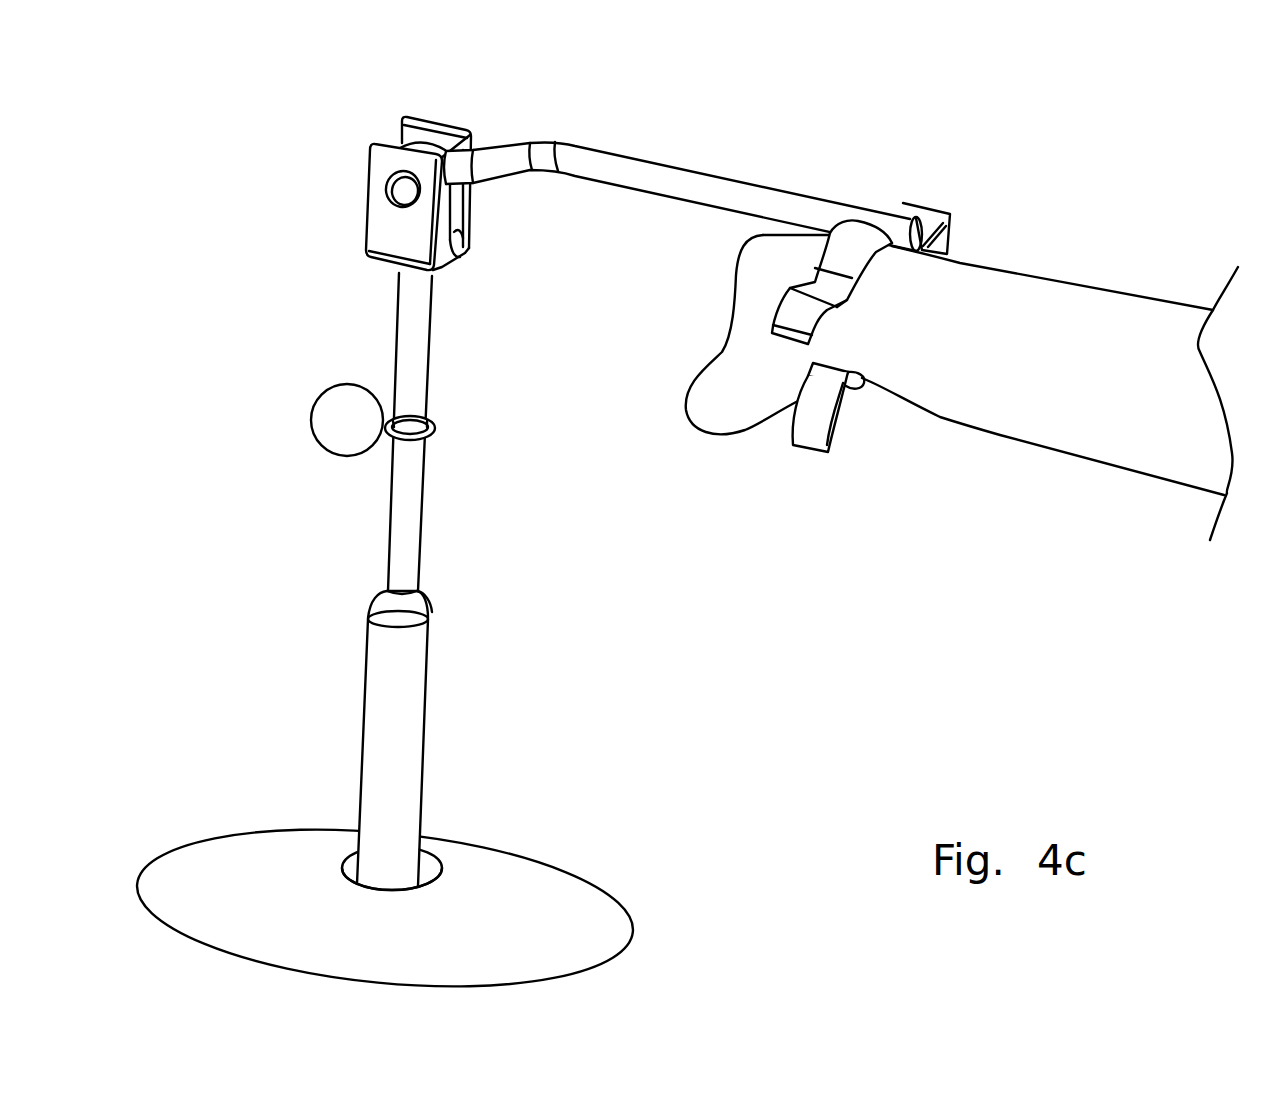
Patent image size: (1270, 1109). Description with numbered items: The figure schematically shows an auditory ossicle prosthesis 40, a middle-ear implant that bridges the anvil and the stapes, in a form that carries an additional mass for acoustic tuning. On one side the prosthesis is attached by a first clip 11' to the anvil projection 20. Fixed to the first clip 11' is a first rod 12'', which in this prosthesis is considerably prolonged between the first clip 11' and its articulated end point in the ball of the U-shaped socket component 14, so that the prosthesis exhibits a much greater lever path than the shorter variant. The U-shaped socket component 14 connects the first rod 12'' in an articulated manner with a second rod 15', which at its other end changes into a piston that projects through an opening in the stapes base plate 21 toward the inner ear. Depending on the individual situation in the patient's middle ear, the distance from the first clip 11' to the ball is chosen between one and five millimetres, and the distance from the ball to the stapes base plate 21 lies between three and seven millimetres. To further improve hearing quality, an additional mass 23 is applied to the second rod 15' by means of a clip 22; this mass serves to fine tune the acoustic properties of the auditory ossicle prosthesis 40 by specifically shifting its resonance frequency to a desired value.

The auditory ossicle prosthesis 40 is at (566, 479).
The first rod 12'' is at (697, 187).
The U-shaped socket component 14 is at (425, 249).
The anvil projection 20 is at (982, 303).
The first clip 11' is at (870, 425).
The additional mass 23 is at (323, 413).
The clip 22 is at (437, 430).
The second rod 15' is at (440, 581).
The stapes base plate 21 is at (535, 903).